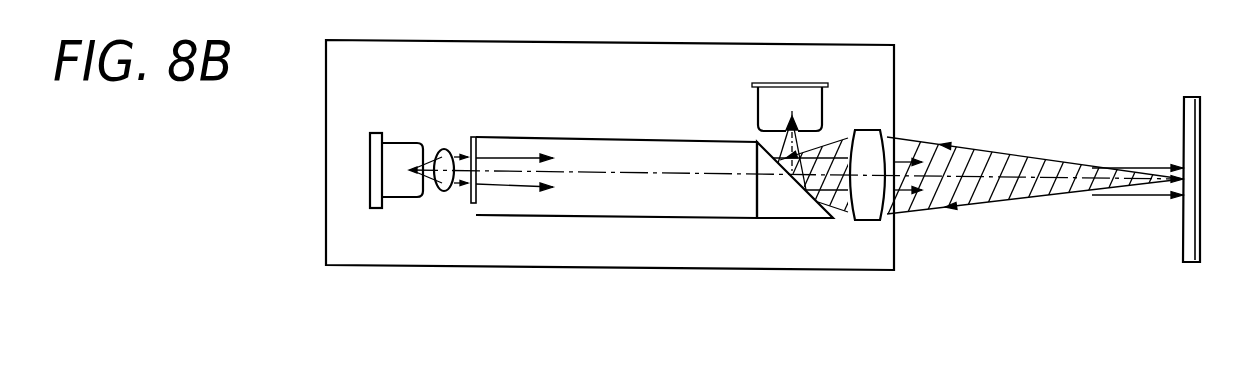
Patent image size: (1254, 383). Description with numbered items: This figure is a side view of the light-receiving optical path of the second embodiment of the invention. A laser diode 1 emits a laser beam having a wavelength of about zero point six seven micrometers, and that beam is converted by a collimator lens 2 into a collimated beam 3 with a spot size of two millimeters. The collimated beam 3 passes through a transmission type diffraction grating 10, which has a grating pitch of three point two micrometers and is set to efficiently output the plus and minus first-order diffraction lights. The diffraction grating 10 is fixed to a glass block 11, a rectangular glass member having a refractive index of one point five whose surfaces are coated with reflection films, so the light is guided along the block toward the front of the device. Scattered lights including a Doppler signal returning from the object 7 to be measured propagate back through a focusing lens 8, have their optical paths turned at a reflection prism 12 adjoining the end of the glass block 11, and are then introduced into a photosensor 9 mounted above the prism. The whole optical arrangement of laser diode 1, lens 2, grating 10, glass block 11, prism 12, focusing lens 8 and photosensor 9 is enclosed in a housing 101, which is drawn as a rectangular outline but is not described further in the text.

The laser diode 1 is at (399, 157).
The collimator lens 2 is at (443, 151).
The collimated beam 3 is at (453, 190).
The object to be measured 7 is at (1192, 257).
The focusing lens 8 is at (870, 214).
The photosensor 9 is at (795, 96).
The transmission type diffraction grating 10 is at (470, 203).
The glass block 11 is at (625, 205).
The reflection prism 12 is at (783, 205).
The housing 101 is at (343, 250).